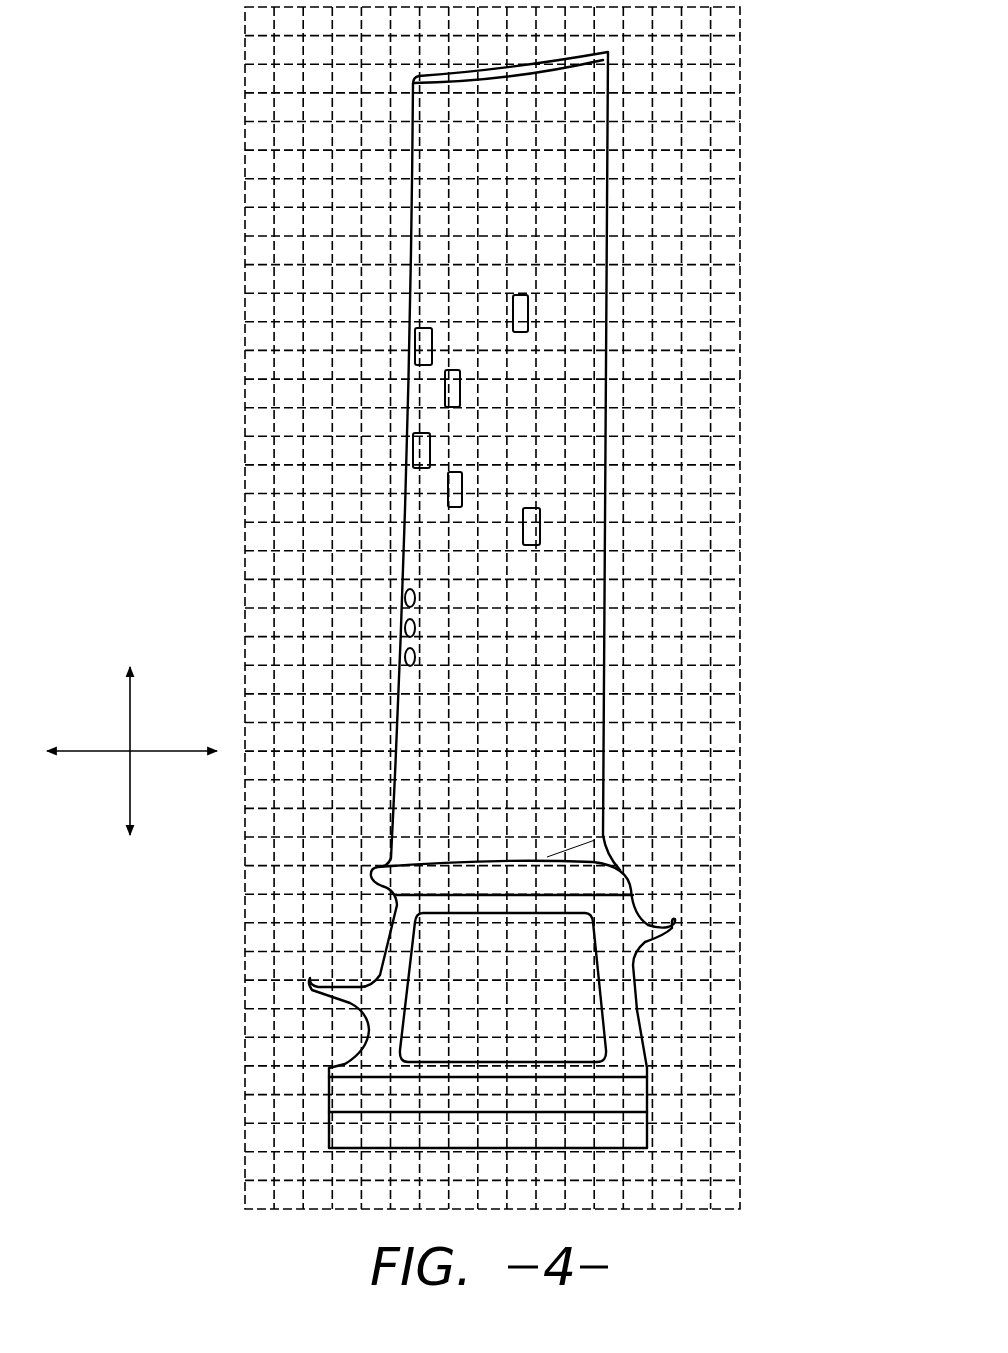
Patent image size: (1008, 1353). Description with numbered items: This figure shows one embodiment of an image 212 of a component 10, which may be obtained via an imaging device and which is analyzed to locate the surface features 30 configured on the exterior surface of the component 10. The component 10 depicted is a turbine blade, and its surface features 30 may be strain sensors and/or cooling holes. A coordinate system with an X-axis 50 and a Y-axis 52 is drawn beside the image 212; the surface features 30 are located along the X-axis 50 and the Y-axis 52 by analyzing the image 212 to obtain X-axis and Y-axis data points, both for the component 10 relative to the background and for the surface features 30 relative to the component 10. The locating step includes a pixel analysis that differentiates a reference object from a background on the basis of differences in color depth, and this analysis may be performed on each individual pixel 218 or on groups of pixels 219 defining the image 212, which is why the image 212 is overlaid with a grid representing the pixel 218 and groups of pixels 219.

The image 212 is at (171, 117).
The groups of pixels 219 is at (257, 250).
The pixel 218 is at (260, 340).
The component 10 is at (610, 620).
The surface features 30 is at (450, 510).
The Y-axis 52 is at (135, 718).
The X-axis 50 is at (155, 755).